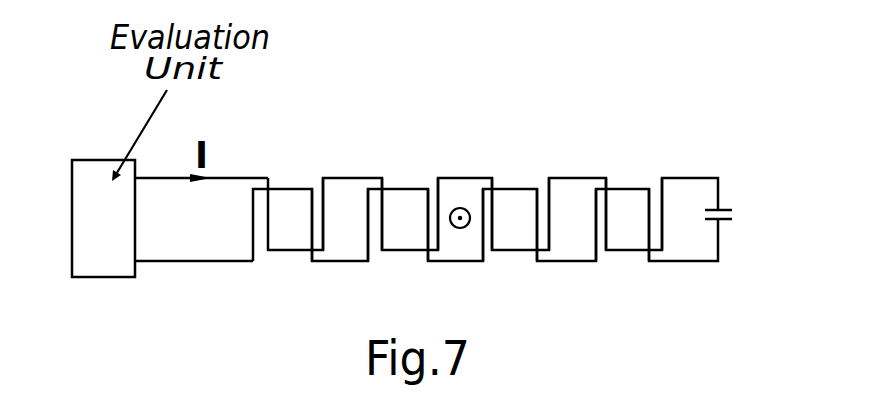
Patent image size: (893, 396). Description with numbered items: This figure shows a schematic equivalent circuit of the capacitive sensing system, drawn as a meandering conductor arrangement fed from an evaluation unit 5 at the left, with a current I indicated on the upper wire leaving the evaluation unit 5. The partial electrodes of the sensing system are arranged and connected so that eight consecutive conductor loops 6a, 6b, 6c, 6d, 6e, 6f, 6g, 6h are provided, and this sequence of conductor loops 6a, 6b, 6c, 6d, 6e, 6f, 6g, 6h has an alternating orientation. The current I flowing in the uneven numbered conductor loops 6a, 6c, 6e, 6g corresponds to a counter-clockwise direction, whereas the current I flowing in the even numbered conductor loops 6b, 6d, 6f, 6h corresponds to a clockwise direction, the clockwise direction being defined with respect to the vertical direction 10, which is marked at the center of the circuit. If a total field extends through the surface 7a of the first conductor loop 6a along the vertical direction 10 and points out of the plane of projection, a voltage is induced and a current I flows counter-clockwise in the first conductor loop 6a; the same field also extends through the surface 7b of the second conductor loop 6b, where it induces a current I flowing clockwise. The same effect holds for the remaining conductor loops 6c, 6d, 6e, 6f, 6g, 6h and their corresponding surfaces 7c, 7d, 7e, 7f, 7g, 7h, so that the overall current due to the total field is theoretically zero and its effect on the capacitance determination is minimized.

The evaluation unit 5 is at (86, 160).
The first conductor loop 6a is at (290, 188).
The second conductor loop 6b is at (337, 262).
The conductor loop 6c is at (407, 188).
The conductor loop 6d is at (465, 262).
The conductor loop 6e is at (522, 190).
The conductor loop 6f is at (573, 262).
The conductor loop 6g is at (637, 188).
The conductor loop 6h is at (695, 262).
The surface of the first conductor loop 7a is at (287, 242).
The surface of the second conductor loop 7b is at (348, 192).
The surface of conductor loop 7c is at (402, 233).
The surface of conductor loop 7d is at (475, 188).
The surface of conductor loop 7e is at (521, 250).
The surface of conductor loop 7f is at (578, 188).
The surface of conductor loop 7g is at (625, 240).
The surface of conductor loop 7h is at (700, 192).
The vertical direction 10 is at (460, 208).